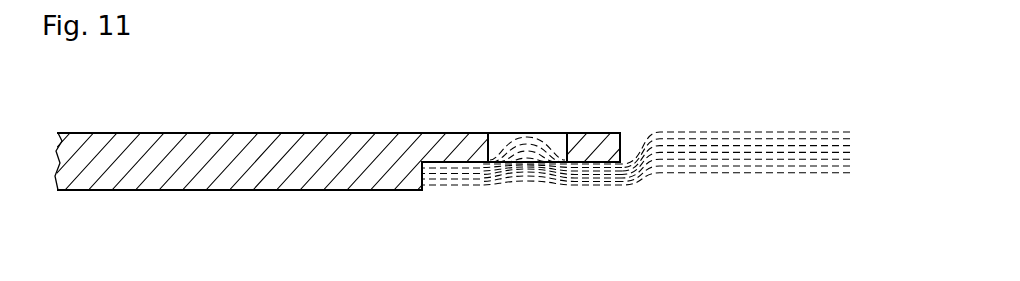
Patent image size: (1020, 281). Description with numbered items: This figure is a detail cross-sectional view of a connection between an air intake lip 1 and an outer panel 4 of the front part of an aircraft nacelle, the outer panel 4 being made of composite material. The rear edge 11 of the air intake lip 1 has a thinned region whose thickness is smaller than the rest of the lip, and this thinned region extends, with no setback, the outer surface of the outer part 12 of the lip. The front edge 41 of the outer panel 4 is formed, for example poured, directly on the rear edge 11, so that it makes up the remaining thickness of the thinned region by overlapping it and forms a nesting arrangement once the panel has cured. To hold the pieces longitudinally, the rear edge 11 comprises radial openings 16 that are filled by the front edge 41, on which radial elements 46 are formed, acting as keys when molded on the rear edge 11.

The air intake lip 1 is at (163, 133).
The outer part of the air intake lip 12 is at (280, 133).
The radial openings 16 is at (503, 132).
The radial elements 46 is at (528, 133).
The rear edge of the air intake lip 11 is at (600, 132).
The outer panel 4 is at (739, 135).
The front edge of the outer panel 41 is at (463, 181).